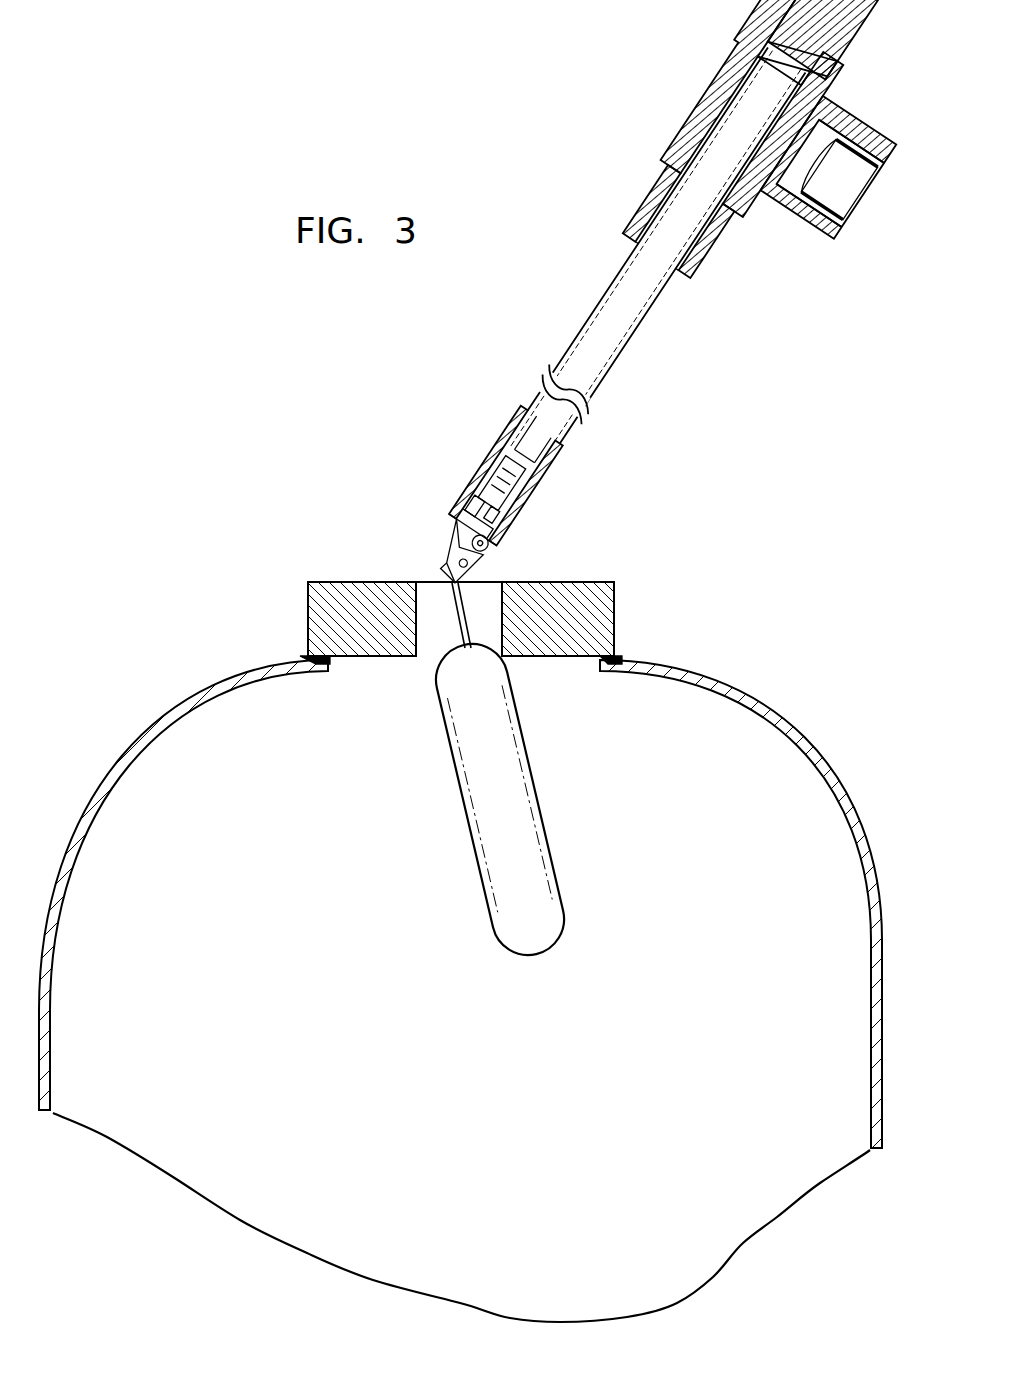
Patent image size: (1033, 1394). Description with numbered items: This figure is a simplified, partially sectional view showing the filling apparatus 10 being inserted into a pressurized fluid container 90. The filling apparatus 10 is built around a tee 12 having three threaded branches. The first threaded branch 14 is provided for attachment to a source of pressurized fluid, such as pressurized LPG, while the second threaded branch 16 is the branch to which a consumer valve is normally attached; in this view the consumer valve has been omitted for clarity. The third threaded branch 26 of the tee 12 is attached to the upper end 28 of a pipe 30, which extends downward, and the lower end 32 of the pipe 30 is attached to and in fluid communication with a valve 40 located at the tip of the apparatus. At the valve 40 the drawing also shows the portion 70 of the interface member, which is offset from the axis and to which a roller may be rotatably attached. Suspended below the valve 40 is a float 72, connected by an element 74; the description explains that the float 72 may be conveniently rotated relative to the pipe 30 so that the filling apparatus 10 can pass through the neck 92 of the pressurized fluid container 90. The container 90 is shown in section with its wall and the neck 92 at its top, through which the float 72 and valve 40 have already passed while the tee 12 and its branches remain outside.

The filling apparatus 10 is at (636, 110).
The tee 12 is at (698, 106).
The first threaded branch 14 is at (858, 48).
The second threaded branch 16 is at (808, 218).
The third threaded branch 26 is at (650, 200).
The upper end 28 is at (640, 243).
The pipe 30 is at (630, 356).
The lower end 32 is at (553, 383).
The valve 40 is at (576, 455).
The portion 70 is at (680, 270).
The float 72 is at (772, 162).
The tether rod 74 is at (468, 610).
The pressurized fluid container 90 is at (760, 716).
The neck 92 is at (438, 597).